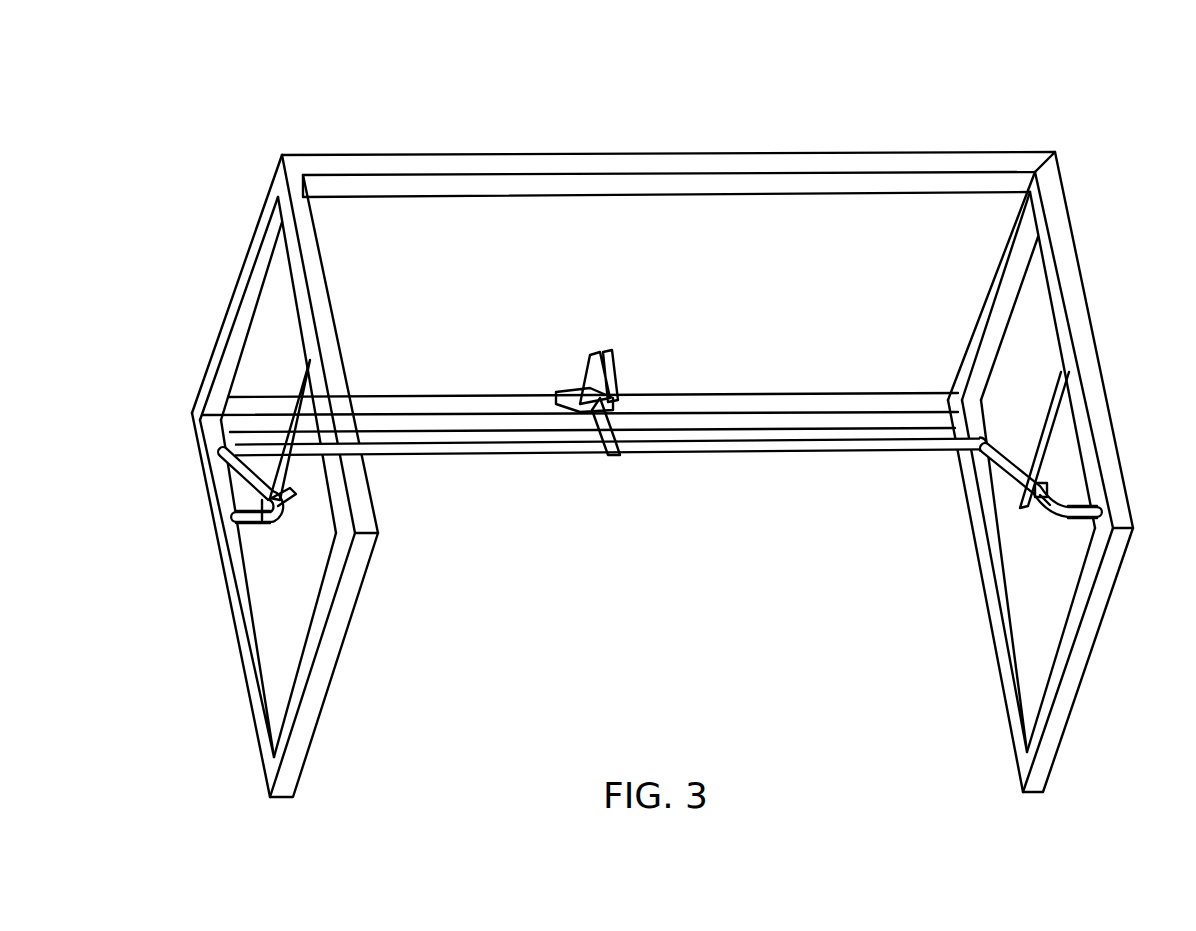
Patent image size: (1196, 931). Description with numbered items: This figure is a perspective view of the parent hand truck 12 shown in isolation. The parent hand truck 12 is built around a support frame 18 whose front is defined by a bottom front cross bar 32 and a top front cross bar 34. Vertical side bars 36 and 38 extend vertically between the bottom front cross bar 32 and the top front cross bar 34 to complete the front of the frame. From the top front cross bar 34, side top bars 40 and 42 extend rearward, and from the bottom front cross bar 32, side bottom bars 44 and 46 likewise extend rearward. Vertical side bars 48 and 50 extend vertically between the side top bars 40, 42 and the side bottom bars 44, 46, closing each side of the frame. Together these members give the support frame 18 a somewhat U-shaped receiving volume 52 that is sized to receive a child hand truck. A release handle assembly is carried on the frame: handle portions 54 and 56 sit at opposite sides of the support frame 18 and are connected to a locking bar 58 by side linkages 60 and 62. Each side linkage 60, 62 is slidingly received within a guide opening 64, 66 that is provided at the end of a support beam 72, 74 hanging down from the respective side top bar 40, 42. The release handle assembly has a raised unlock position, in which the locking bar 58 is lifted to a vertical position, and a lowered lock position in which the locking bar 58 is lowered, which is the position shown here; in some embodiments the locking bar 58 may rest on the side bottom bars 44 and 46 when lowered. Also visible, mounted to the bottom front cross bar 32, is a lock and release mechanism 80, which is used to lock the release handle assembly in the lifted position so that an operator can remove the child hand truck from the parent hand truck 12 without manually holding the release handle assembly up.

The parent hand truck 12 is at (1108, 114).
The support frame 18 is at (874, 134).
The bottom front cross bar 32 is at (744, 405).
The top front cross bar 34 is at (544, 163).
The vertical side bar 36 is at (229, 291).
The vertical side bar 38 is at (998, 333).
The side top bar 40 is at (368, 517).
The side top bar 42 is at (1085, 520).
The side bottom bar 44 is at (290, 645).
The side bottom bar 46 is at (982, 595).
The vertical side bar 48 is at (316, 718).
The vertical side bar 50 is at (1065, 725).
The receiving volume 52 is at (638, 610).
The handle portion 54 is at (227, 518).
The handle portion 56 is at (1100, 514).
The locking bar 58 is at (710, 460).
The side linkage 60 is at (221, 470).
The side linkage 62 is at (1000, 468).
The guide opening 64 is at (268, 542).
The guide opening 66 is at (1066, 485).
The support beam 72 is at (312, 455).
The support beam 74 is at (990, 482).
The lock and release mechanism 80 is at (614, 333).